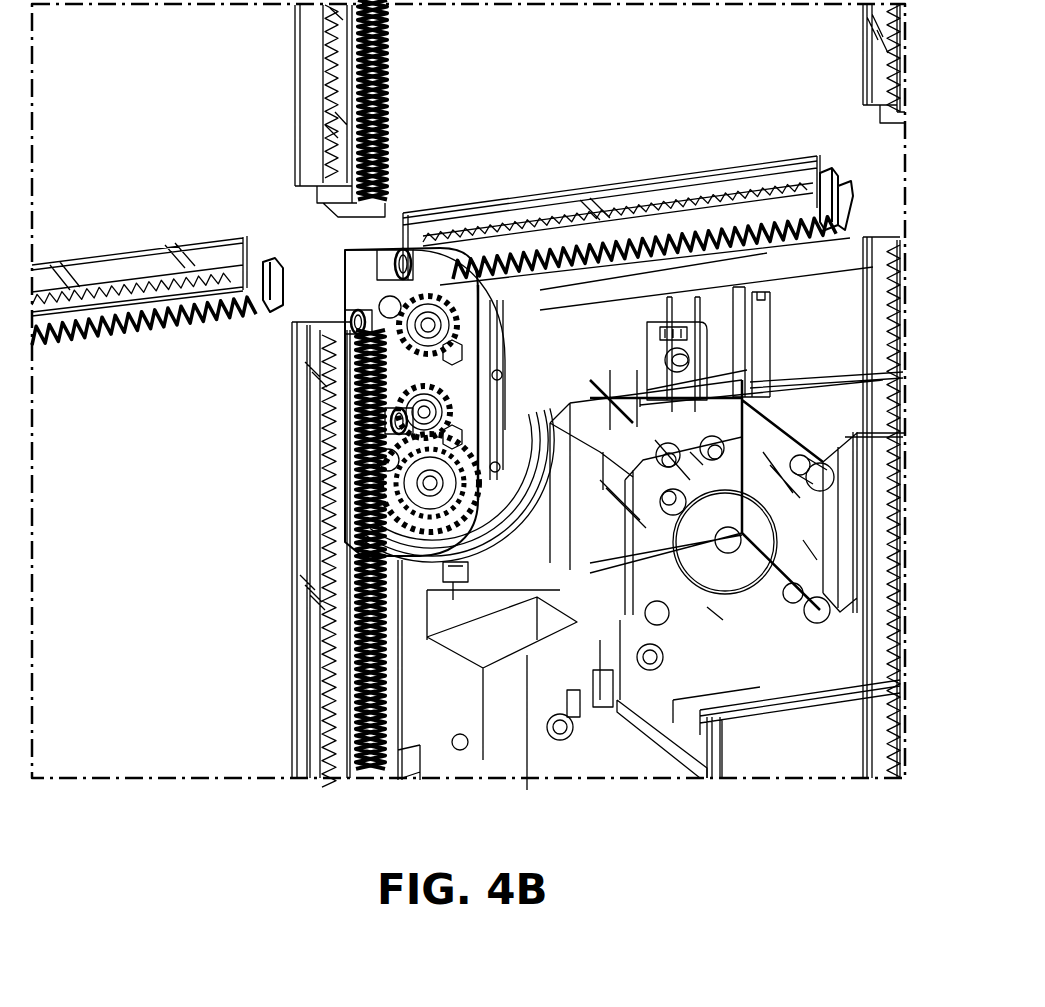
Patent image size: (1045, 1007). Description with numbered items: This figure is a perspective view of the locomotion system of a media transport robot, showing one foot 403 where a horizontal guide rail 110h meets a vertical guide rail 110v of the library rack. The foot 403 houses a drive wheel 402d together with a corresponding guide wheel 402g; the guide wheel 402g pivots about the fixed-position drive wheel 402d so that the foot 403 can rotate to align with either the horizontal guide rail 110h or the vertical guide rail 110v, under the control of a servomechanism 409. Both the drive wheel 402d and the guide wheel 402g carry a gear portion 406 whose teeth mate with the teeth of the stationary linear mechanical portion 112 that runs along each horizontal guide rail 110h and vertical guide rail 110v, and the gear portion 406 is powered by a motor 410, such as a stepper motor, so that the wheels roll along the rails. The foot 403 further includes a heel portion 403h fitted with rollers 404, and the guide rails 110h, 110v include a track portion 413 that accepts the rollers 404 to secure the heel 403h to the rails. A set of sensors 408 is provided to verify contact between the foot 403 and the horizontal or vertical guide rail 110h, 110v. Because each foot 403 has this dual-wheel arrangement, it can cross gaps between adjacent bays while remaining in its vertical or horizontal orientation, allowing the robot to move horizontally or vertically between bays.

The vertical guide rail 110v is at (313, 92).
The horizontal guide rail 110h is at (528, 230).
The mechanical portion 112 is at (390, 70).
The track portion 413 is at (305, 692).
The foot 403 is at (348, 241).
The heel portion 403h is at (378, 232).
The rollers 404 is at (406, 258).
The gear portion 406 is at (428, 312).
The drive wheel 402d is at (383, 300).
The guide wheel 402g is at (374, 473).
The sensors 408 is at (692, 352).
The servomechanism 409 is at (815, 563).
The motor 410 is at (607, 593).